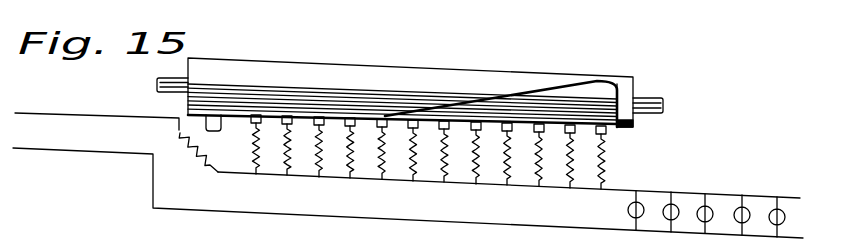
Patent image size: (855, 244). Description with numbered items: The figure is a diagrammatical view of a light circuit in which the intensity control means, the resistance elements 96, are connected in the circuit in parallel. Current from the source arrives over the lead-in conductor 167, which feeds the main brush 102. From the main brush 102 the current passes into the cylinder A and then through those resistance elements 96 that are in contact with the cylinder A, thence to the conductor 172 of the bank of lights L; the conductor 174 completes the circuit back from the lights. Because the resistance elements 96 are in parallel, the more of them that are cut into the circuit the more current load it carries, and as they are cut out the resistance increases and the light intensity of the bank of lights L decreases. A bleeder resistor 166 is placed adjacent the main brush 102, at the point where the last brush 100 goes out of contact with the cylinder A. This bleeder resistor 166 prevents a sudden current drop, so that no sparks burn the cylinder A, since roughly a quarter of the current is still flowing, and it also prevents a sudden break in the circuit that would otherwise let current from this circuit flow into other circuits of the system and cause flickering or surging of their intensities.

The cylinder A is at (438, 74).
The bank of lights L is at (672, 196).
The resistance elements 96 is at (316, 158).
The last brush 100 is at (283, 124).
The main brush 102 is at (216, 115).
The bleeder resistor 166 is at (197, 168).
The lead-in conductor 167 is at (84, 118).
The conductor 172 is at (398, 184).
The conductor 174 is at (360, 221).